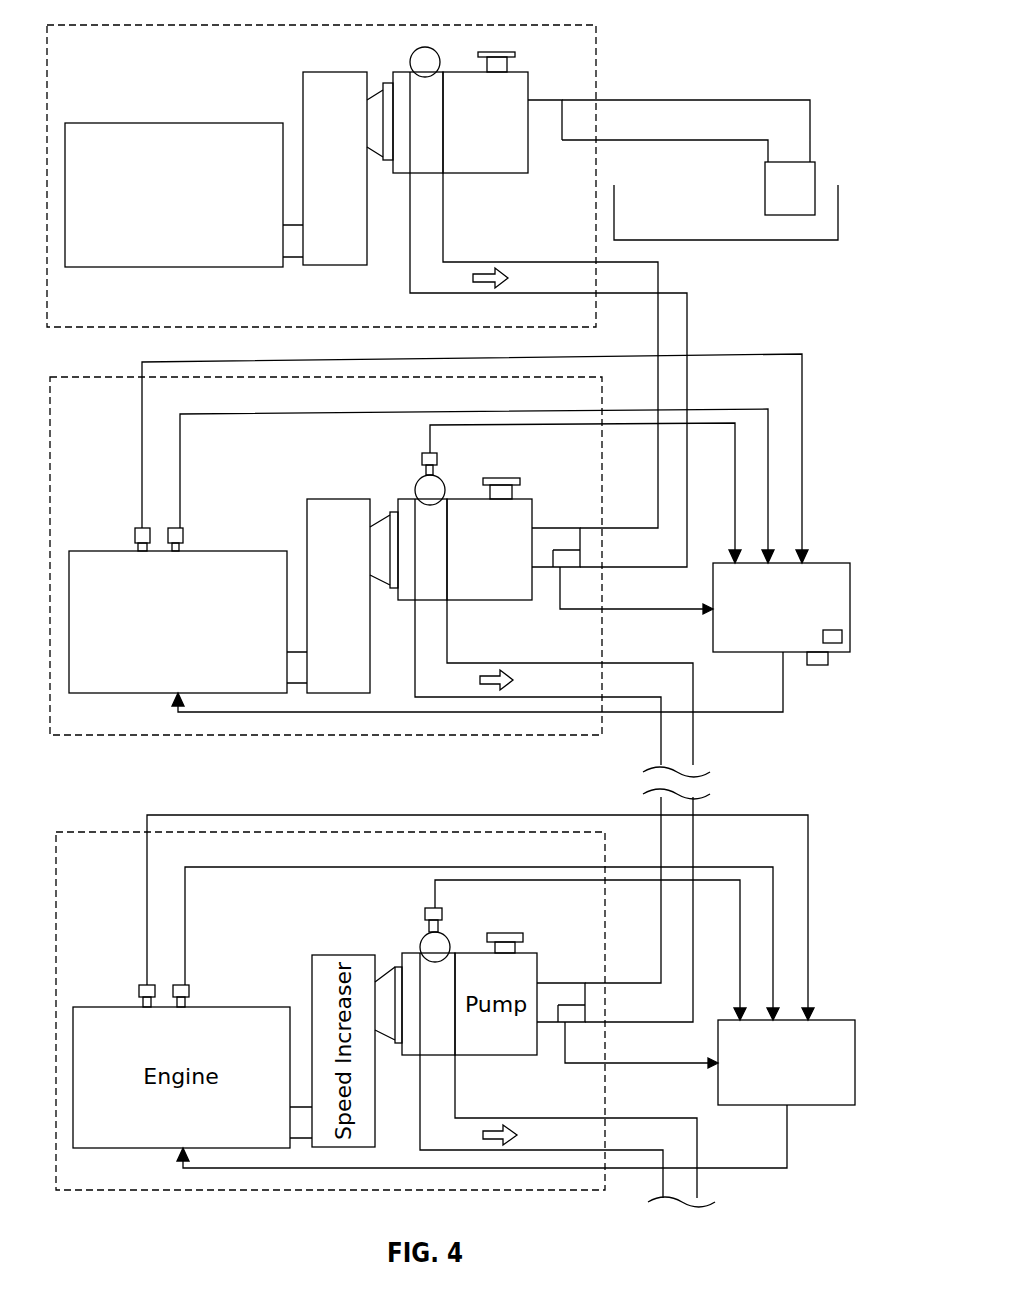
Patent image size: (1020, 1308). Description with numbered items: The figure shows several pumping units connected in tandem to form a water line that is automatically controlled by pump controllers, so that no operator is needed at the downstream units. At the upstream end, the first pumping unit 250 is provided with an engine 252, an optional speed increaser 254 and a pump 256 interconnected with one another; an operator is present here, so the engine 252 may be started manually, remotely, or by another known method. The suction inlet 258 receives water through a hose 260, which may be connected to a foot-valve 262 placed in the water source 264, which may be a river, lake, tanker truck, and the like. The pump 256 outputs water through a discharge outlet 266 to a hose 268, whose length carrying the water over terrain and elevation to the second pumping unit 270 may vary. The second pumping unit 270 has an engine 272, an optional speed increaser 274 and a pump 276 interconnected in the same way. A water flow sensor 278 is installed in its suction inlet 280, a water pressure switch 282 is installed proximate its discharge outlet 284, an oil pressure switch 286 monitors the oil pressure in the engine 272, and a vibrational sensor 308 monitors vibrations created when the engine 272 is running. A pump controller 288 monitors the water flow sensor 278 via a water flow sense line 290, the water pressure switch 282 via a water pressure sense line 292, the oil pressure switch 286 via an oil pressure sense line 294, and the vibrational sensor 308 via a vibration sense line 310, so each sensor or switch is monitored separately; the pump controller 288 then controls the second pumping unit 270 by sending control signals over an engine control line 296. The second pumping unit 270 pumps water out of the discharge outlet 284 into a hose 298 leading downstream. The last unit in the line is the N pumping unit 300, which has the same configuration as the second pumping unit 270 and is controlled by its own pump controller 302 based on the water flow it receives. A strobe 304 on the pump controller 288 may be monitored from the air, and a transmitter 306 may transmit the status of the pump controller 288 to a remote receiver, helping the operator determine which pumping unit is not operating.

The first pumping unit 250 is at (115, 24).
The engine 252 is at (128, 123).
The speed increaser 254 is at (303, 108).
The pump 256 is at (518, 70).
The suction inlet 258 is at (533, 102).
The hose 260 is at (745, 100).
The foot-valve 262 is at (765, 178).
The water source 264 is at (725, 242).
The discharge outlet 266 is at (410, 62).
The hose 268 is at (443, 223).
The second pumping unit 270 is at (118, 377).
The engine 272 is at (130, 551).
The speed increaser 274 is at (338, 498).
The pump 276 is at (520, 495).
The water flow sensor 278 is at (560, 568).
The suction inlet 280 is at (535, 528).
The water pressure switch 282 is at (437, 460).
The discharge outlet 284 is at (416, 485).
The oil pressure switch 286 is at (183, 535).
The pump controller 288 is at (812, 563).
The water flow sense line 290 is at (624, 612).
The water pressure sense line 292 is at (735, 520).
The oil pressure sense line 294 is at (360, 413).
The engine control line 296 is at (783, 690).
The hose 298 is at (693, 745).
The N pumping unit 300 is at (122, 832).
The pump controller 302 is at (800, 1105).
The strobe 304 is at (817, 665).
The transmitter 306 is at (835, 647).
The vibrational sensor 308 is at (135, 528).
The vibration sense line 310 is at (802, 452).